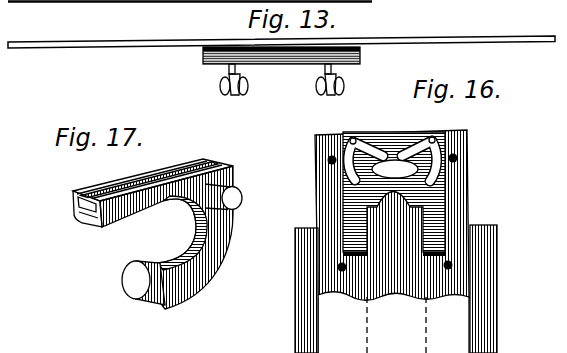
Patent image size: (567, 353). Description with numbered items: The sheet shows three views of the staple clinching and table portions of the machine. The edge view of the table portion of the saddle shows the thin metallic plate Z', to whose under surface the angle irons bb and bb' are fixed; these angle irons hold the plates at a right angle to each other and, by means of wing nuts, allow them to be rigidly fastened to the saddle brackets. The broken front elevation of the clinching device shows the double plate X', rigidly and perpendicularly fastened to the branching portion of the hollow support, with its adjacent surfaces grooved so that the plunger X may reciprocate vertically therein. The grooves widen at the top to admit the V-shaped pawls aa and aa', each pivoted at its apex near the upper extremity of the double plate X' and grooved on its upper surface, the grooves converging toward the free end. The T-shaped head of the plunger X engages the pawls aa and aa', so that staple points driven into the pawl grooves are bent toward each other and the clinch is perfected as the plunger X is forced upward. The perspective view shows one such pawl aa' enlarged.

In FIG. 13, the thin metallic plate Z' is at (281, 29).
In FIG. 13, the angle iron bb is at (298, 58).
In FIG. 13, the angle iron bb' is at (247, 64).
In FIG. 17, the V-shaped pawl aa' is at (157, 234).
In FIG. 16, the V-shaped pawl aa' is at (365, 141).
In FIG. 16, the V-shaped pawl aa is at (419, 141).
In FIG. 16, the double plate X' is at (392, 241).
In FIG. 16, the plunger X is at (393, 202).